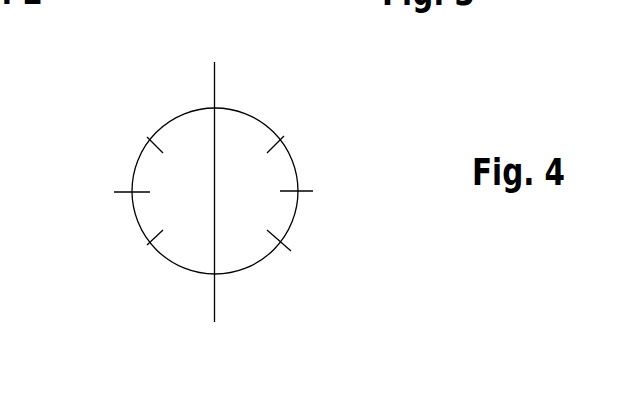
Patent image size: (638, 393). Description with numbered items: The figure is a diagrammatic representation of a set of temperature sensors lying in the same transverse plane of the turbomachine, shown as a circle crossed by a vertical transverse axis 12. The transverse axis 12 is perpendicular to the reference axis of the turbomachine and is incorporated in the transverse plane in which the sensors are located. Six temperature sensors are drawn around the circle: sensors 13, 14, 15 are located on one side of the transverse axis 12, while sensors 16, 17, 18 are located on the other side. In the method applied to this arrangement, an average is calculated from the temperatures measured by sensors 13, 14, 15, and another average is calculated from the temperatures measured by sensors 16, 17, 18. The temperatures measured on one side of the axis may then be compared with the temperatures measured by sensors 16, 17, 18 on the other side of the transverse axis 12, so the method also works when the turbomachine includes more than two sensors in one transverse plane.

The transverse axis 12 is at (212, 78).
The temperature sensor 13 is at (147, 137).
The temperature sensor 14 is at (113, 192).
The temperature sensor 15 is at (147, 245).
The temperature sensor 16 is at (284, 136).
The temperature sensor 17 is at (313, 191).
The temperature sensor 18 is at (291, 251).